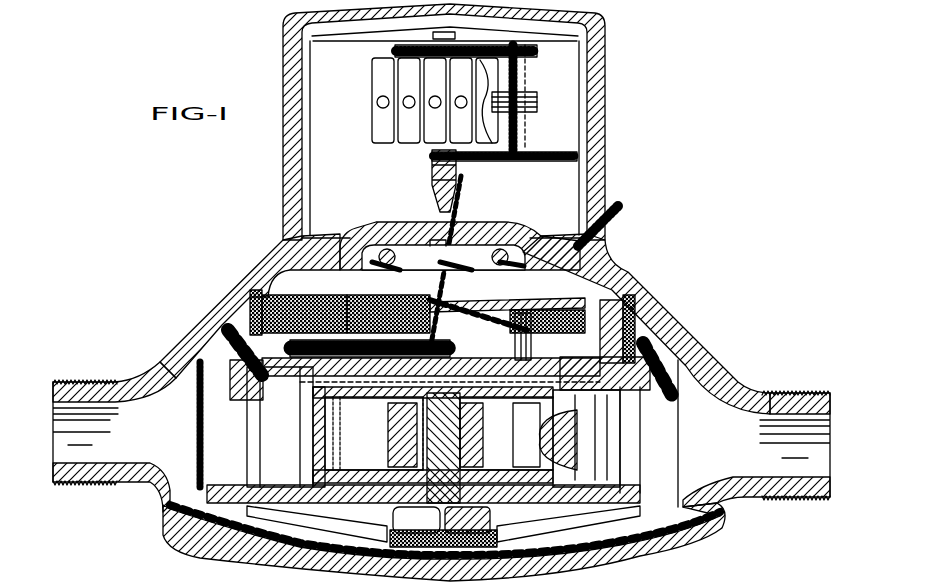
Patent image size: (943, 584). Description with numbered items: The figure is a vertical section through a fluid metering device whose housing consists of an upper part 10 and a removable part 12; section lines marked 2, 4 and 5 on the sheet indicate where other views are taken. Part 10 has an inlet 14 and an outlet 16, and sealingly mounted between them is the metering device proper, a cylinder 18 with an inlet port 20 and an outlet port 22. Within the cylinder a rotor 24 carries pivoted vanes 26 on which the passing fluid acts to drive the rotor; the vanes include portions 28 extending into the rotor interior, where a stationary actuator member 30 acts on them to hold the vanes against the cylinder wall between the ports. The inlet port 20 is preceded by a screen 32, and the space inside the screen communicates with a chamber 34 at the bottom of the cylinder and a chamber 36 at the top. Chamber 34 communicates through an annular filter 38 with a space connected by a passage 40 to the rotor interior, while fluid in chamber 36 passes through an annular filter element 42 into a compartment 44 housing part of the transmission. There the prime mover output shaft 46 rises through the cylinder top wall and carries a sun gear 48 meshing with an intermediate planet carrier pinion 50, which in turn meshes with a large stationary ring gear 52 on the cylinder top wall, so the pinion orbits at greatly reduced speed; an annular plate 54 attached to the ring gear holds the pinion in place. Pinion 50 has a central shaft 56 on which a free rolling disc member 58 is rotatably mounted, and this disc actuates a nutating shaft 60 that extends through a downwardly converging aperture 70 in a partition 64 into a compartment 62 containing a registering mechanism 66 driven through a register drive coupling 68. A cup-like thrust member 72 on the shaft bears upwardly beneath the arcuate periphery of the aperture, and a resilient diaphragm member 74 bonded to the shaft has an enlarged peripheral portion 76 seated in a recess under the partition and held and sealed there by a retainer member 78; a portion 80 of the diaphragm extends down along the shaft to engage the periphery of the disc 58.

The upper part 10 is at (677, 302).
The removable part 12 is at (713, 537).
The inlet 14 is at (116, 484).
The outlet 16 is at (790, 394).
The cylinder 18 is at (263, 510).
The inlet port 20 is at (247, 460).
The outlet port 22 is at (636, 467).
The rotor 24 is at (563, 437).
The vanes 26 is at (583, 463).
The vane portions 28 is at (523, 428).
The actuator member 30 is at (397, 453).
The screen 32 is at (197, 437).
The chamber 34 is at (317, 524).
The chamber 36 is at (242, 322).
The annular filter 38 is at (507, 537).
The passage 40 is at (450, 478).
The annular filter element 42 is at (272, 302).
The compartment 44 is at (338, 268).
The prime mover output shaft 46 is at (407, 368).
The sun gear 48 is at (385, 327).
The intermediate planet carrier pinion 50 is at (570, 370).
The stationary ring gear 52 is at (628, 403).
The annular plate 54 is at (592, 330).
The central shaft 56 is at (530, 318).
The free rolling disc member 58 is at (565, 317).
The nutating shaft 60 is at (452, 230).
The compartment 62 is at (606, 182).
The partition 64 is at (366, 258).
The registering mechanism 66 is at (505, 73).
The register drive coupling 68 is at (437, 177).
The aperture 70 is at (437, 221).
The cup-like thrust member 72 is at (488, 240).
The resilient diaphragm member 74 is at (414, 268).
The enlarged peripheral portion 76 is at (512, 243).
The retainer member 78 is at (488, 260).
The diaphragm portion 80 is at (442, 291).
The section line 2 is at (702, 323).
The section line 4 is at (657, 259).
The section line 5 is at (622, 60).